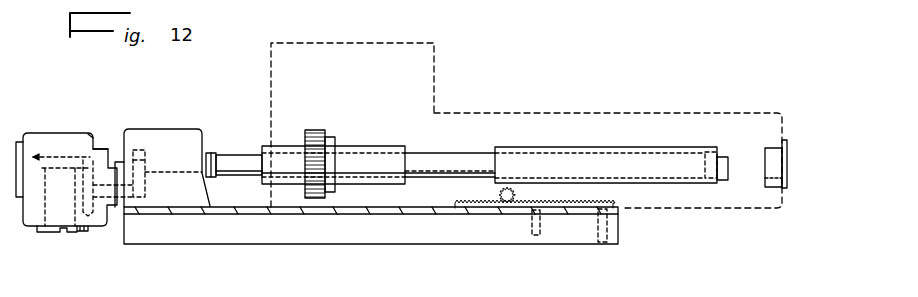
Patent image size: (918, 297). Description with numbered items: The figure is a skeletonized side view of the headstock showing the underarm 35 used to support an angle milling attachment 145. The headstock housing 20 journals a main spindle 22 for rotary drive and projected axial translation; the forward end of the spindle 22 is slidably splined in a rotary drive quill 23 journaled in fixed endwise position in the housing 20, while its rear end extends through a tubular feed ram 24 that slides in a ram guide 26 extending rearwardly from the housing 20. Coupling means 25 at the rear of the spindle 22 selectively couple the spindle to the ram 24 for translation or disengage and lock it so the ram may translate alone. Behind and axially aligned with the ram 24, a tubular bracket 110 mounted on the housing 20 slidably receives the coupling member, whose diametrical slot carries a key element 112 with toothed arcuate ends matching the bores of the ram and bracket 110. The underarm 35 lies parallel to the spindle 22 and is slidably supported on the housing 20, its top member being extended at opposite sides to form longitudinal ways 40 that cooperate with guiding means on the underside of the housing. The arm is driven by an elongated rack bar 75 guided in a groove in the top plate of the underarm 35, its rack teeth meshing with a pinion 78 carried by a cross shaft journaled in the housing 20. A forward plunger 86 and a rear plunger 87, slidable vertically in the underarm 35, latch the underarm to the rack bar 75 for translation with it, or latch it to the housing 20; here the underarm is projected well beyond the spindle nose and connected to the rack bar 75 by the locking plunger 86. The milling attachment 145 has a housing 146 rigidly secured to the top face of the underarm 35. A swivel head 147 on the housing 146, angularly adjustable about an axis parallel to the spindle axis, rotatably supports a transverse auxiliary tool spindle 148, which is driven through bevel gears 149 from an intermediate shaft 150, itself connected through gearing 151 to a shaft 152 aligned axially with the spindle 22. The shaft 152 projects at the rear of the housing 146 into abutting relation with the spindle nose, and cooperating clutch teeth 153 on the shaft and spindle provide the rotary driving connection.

The housing 20 is at (438, 71).
The ram guide 26 is at (633, 110).
The milling attachment 145 is at (36, 129).
The swivel head 147 is at (74, 143).
The bevel gears 149 is at (89, 149).
The attachment housing 146 is at (171, 130).
The shaft 152 is at (167, 166).
The gearing 151 is at (146, 193).
The clutch teeth 153 is at (208, 152).
The auxiliary tool spindle 148 is at (43, 234).
The intermediate shaft 150 is at (113, 215).
The main spindle 22 is at (244, 177).
The rotary drive quill 23 is at (360, 146).
The feed ram 24 is at (603, 152).
The coupling means 25 is at (725, 197).
The tubular bracket 110 is at (770, 148).
The key element 112 is at (718, 153).
The underarm 35 is at (250, 247).
The longitudinal ways 40 is at (410, 214).
The rack bar 75 is at (601, 203).
The pinion 78 is at (499, 194).
The forward plunger 86 is at (530, 236).
The rear plunger 87 is at (620, 230).